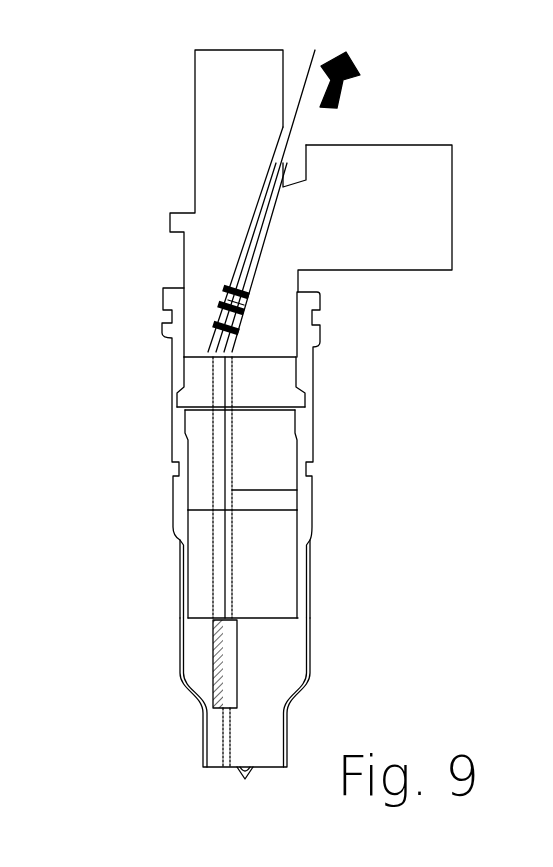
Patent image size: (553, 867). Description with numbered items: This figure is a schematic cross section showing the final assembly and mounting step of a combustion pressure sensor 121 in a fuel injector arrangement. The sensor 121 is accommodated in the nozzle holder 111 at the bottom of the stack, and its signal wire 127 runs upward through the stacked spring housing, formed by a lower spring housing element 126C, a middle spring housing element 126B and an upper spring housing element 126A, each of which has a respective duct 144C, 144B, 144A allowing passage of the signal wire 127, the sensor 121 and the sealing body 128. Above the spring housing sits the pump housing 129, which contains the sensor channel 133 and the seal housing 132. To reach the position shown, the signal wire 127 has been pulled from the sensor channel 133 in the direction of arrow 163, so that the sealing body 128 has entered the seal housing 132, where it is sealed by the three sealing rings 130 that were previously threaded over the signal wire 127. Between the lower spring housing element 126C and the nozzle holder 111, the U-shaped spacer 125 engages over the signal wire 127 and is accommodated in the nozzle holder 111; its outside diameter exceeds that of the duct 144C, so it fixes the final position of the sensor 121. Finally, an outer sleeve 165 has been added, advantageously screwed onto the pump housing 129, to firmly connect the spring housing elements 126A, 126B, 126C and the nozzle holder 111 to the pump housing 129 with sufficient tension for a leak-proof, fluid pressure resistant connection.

The signal wire 127 is at (303, 90).
The arrow 163 is at (340, 88).
The sensor channel 133 is at (258, 203).
The pump housing 129 is at (415, 195).
The sealing rings 130 is at (214, 323).
The sealing body 128 is at (246, 305).
The seal housing 132 is at (205, 345).
The upper spring housing element 126A is at (265, 380).
The duct 144A is at (230, 397).
The middle spring housing element 126B is at (253, 452).
The duct 144B is at (297, 490).
The lower spring housing element 126C is at (267, 565).
The duct 144C is at (237, 592).
The U-shaped spacer 125 is at (225, 662).
The nozzle holder 111 is at (253, 710).
The combustion pressure sensor 121 is at (227, 730).
The outer sleeve 165 is at (180, 503).